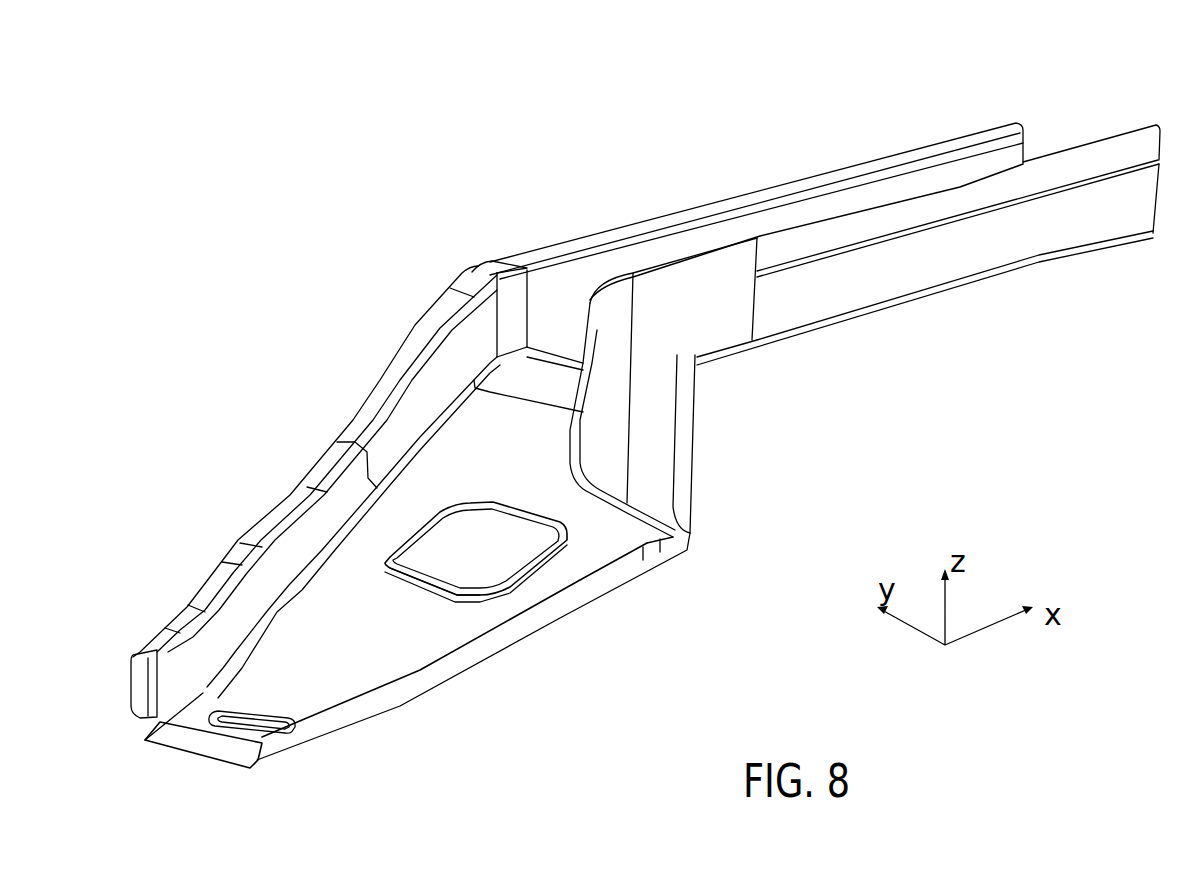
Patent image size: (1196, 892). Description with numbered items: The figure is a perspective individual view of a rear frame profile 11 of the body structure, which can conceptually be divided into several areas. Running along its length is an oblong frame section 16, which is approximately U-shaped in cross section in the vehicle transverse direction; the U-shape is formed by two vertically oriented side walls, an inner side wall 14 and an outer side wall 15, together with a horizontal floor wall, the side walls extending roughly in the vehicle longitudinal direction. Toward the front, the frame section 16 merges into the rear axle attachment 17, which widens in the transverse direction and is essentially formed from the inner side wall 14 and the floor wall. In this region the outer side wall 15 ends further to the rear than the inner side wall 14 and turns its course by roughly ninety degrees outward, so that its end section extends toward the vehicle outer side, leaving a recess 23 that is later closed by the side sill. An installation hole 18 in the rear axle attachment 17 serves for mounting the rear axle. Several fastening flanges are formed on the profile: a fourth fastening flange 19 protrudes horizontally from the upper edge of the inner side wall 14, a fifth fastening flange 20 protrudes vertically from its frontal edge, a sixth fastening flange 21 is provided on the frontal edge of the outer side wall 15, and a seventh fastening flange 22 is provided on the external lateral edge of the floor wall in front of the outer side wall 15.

The rear frame profile 11 is at (651, 142).
The inner side wall 14 is at (470, 337).
The outer side wall 15 is at (863, 282).
The frame section 16 is at (1091, 143).
The rear axle attachment 17 is at (585, 557).
The installation hole 18 is at (463, 583).
The fourth fastening flange 19 is at (387, 373).
The fifth fastening flange 20 is at (142, 675).
The sixth fastening flange 21 is at (686, 481).
The seventh fastening flange 22 is at (313, 737).
The recess 23 is at (671, 453).